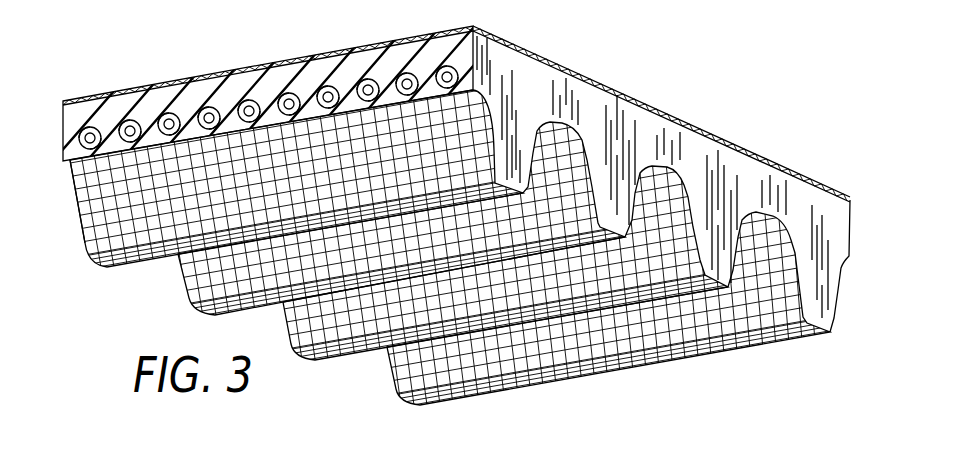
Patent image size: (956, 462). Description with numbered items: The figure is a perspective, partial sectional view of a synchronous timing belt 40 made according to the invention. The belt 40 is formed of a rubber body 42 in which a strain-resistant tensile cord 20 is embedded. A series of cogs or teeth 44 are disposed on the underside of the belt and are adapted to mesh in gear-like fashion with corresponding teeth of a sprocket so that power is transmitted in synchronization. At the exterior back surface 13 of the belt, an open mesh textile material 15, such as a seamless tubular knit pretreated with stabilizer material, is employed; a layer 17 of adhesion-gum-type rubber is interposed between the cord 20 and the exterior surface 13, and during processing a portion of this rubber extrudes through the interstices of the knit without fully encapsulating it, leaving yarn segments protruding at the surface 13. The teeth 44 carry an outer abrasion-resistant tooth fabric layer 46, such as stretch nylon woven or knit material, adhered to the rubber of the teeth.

The exterior back surface 13 is at (583, 64).
The open mesh textile material 15 is at (64, 103).
The layer of rubber of adhesion gum type 17 is at (238, 88).
The tensile cord 20 is at (108, 100).
The belt 40 is at (726, 100).
The rubber body 42 is at (816, 250).
The cogs or teeth 44 is at (814, 303).
The tooth fabric layer 46 is at (78, 215).